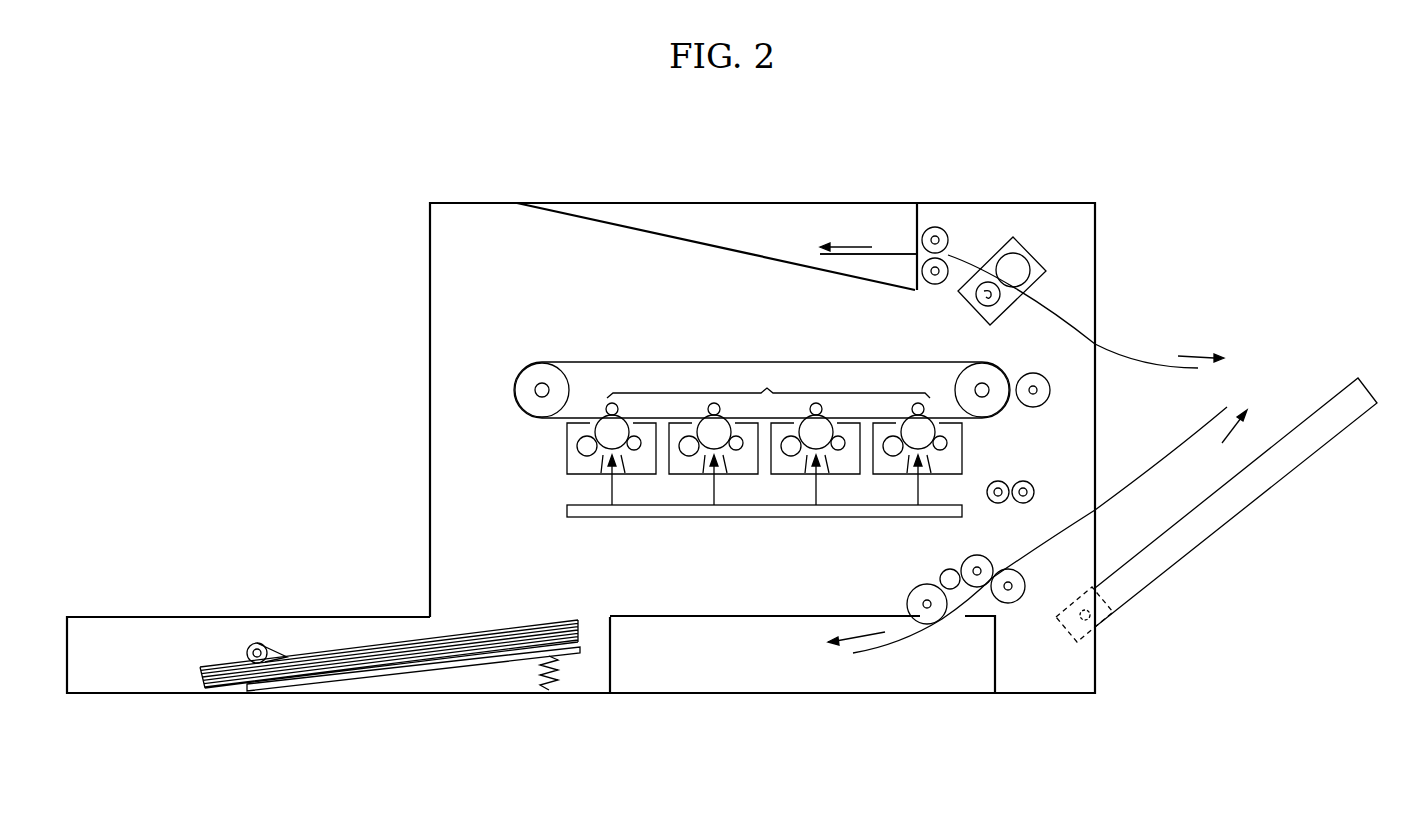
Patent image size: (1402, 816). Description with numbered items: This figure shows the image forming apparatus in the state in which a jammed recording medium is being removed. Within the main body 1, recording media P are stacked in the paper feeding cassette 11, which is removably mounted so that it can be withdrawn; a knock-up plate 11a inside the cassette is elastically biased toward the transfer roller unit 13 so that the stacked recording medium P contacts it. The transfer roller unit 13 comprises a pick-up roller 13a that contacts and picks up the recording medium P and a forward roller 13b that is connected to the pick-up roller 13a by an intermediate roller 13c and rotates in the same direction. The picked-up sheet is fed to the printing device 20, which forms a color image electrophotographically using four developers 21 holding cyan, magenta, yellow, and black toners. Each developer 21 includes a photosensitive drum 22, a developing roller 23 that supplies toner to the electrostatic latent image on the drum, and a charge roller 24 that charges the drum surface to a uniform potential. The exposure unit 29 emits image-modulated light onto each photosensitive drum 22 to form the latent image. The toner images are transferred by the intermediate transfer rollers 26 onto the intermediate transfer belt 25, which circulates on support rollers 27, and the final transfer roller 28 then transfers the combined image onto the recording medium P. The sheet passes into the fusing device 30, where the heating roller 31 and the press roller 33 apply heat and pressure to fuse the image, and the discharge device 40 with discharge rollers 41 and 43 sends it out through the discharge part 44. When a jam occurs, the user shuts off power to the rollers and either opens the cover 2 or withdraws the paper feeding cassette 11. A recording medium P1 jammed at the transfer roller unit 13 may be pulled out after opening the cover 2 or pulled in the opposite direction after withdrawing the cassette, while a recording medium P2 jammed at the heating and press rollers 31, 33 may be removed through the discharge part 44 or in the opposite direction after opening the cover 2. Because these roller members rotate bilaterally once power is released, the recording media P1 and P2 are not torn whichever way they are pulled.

The main body 1 is at (1095, 290).
The cover 2 is at (1288, 465).
The paper feeding cassette 11 is at (413, 696).
The knock-up plate 11a is at (393, 673).
The transfer roller unit 13 is at (939, 569).
The pick-up roller 13a is at (915, 598).
The forward roller 13b is at (980, 556).
The intermediate roller 13c is at (946, 568).
The printing device 20 is at (711, 485).
The developer 21 is at (589, 485).
The photosensitive drum 22 is at (608, 449).
The developing roller 23 is at (587, 456).
The charge roller 24 is at (634, 450).
The intermediate transfer belt 25 is at (634, 362).
The intermediate transfer roller 26 is at (768, 382).
The support roller 27 is at (513, 390).
The final transfer roller 28 is at (1037, 372).
The exposure unit 29 is at (771, 517).
The fusing device 30 is at (1024, 248).
The heating roller 31 is at (1027, 240).
The press roller 33 is at (973, 302).
The discharge device 40 is at (935, 212).
The discharge roller 41 is at (943, 222).
The discharge roller 43 is at (950, 267).
The discharge part 44 is at (917, 247).
The recording medium P is at (372, 645).
The recording medium P1 is at (1155, 478).
The recording medium P2 is at (1125, 352).